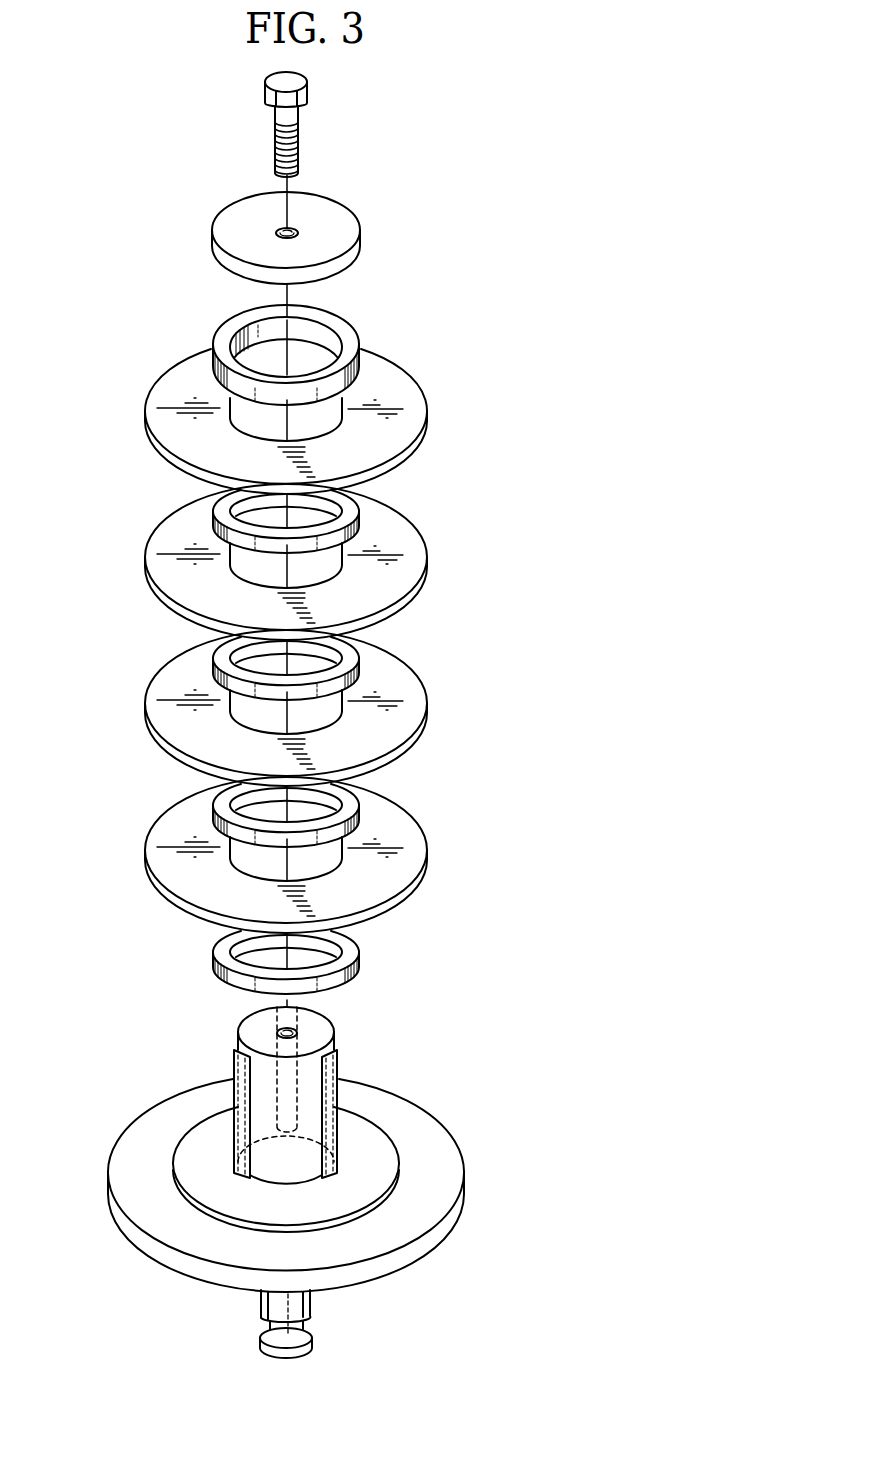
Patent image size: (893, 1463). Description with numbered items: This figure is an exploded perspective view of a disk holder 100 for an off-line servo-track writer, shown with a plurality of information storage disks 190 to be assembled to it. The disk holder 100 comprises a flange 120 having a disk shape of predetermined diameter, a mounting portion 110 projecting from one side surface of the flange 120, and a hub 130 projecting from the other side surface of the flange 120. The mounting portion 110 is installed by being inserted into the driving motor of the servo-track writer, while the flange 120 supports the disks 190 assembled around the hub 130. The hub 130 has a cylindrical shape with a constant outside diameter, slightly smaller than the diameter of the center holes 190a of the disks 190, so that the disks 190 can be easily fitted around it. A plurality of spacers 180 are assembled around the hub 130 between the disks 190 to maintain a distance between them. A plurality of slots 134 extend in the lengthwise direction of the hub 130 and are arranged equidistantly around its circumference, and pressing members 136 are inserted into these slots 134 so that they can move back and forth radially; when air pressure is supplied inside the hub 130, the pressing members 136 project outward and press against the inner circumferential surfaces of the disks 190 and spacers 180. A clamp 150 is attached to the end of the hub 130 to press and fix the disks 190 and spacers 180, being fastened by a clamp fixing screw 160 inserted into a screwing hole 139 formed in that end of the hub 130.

The disk holder 100 is at (158, 1051).
The mounting portion 110 is at (270, 1305).
The flange 120 is at (430, 1142).
The hub 130 is at (252, 1028).
The slots 134 is at (253, 1140).
The pressing members 136 is at (232, 1082).
The screwing hole 139 is at (298, 1032).
The clamp 150 is at (347, 227).
The clamp fixing screw 160 is at (300, 132).
The spacers 180 is at (223, 340).
The information storage disks 190 is at (407, 428).
The center holes 190a is at (330, 412).